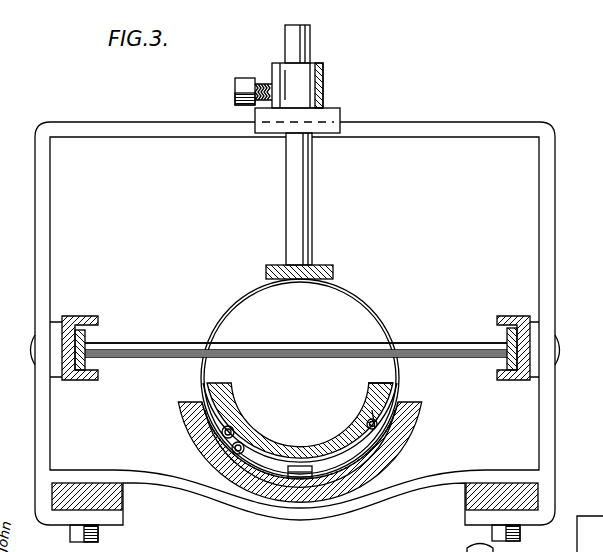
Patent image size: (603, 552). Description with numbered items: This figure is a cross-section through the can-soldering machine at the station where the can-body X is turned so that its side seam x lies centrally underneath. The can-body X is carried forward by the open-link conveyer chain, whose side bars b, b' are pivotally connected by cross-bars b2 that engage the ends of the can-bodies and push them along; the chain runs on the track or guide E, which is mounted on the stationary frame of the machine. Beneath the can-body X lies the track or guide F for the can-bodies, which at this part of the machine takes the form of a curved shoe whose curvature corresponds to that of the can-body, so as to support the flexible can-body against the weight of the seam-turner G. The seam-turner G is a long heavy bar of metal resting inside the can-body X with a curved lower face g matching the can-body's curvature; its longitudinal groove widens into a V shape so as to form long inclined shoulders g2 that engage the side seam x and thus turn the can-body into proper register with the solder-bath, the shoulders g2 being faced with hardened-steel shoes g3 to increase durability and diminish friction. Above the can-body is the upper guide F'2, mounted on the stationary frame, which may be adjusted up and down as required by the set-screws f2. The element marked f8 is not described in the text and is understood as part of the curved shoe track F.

The set-screws f2 is at (247, 76).
The upper guide for the can-bodies F'2 is at (322, 259).
The can-body X is at (364, 300).
The side bars b is at (296, 340).
The cross-bars b2 is at (425, 347).
The side bars b' is at (489, 347).
The track or guide for the can-body carrier E is at (524, 302).
The track or guide for the can-bodies F is at (313, 452).
The thin band in cradle f8 is at (398, 440).
The curved lower face g is at (227, 400).
The can-body-seam turner G is at (366, 394).
The seam x is at (240, 434).
The curved or inclined shoulders g2 is at (378, 468).
The hardened-steel shoes or faces g3 is at (356, 486).